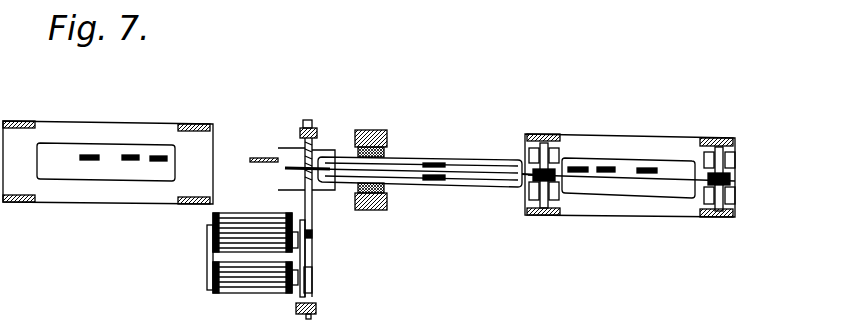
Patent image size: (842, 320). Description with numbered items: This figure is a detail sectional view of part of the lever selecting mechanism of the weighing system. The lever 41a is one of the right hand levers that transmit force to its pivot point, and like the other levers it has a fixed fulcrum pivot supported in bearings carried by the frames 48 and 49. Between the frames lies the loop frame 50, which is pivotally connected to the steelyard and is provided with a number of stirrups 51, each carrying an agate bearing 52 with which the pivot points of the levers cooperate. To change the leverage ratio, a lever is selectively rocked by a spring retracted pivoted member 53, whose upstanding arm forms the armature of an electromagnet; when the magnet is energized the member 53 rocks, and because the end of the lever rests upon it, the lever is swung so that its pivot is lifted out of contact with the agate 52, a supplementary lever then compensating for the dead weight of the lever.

The frame 48 is at (36, 122).
The frame 49 is at (719, 216).
The loop frame 50 is at (372, 203).
The stirrup 51 is at (388, 151).
The agate bearing 52 is at (244, 291).
The pivoted member 53 is at (316, 189).
The lever 41a is at (598, 178).